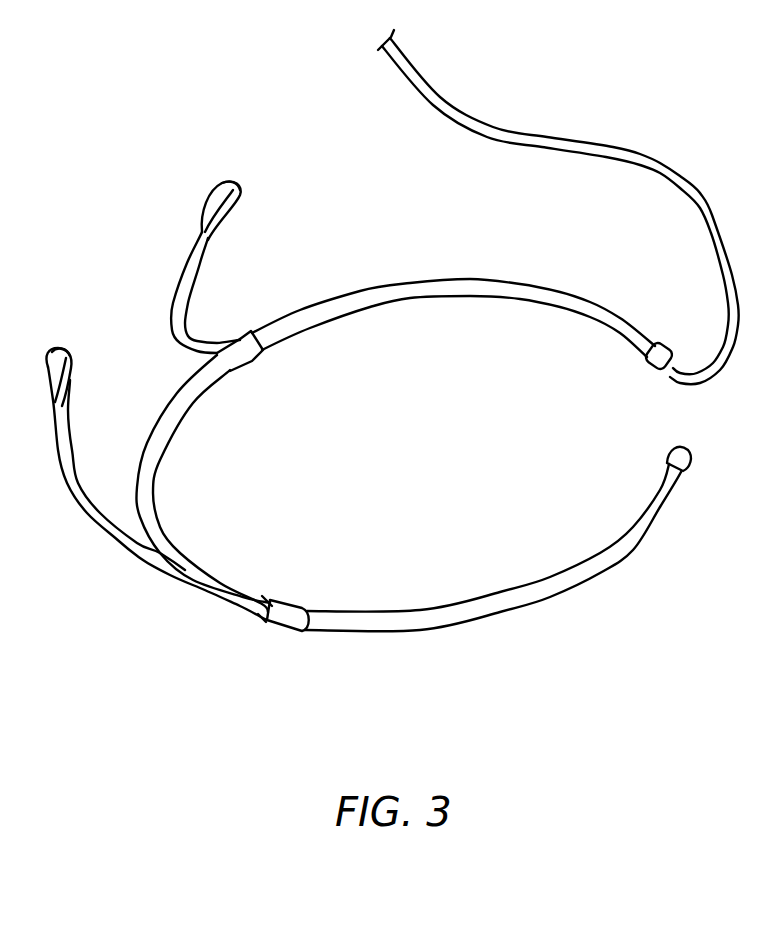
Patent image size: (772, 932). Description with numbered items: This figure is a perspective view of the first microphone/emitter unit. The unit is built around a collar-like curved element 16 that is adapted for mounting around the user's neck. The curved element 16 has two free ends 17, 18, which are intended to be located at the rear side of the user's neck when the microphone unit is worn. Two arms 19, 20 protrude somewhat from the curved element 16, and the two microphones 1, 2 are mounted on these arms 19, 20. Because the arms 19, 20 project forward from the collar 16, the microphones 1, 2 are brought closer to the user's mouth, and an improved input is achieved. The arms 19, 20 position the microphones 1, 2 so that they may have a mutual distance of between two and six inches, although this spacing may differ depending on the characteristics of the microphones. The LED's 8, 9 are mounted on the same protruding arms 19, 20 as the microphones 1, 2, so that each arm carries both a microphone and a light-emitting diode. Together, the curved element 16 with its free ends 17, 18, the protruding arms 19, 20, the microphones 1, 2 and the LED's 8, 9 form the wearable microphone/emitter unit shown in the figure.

The microphone 1 is at (237, 200).
The microphone 2 is at (60, 412).
The LED 8 is at (226, 186).
The LED 9 is at (60, 360).
The collar-like curved element 16 is at (430, 620).
The free end 17 is at (664, 354).
The free end 18 is at (681, 446).
The arm 19 is at (195, 268).
The arm 20 is at (70, 450).